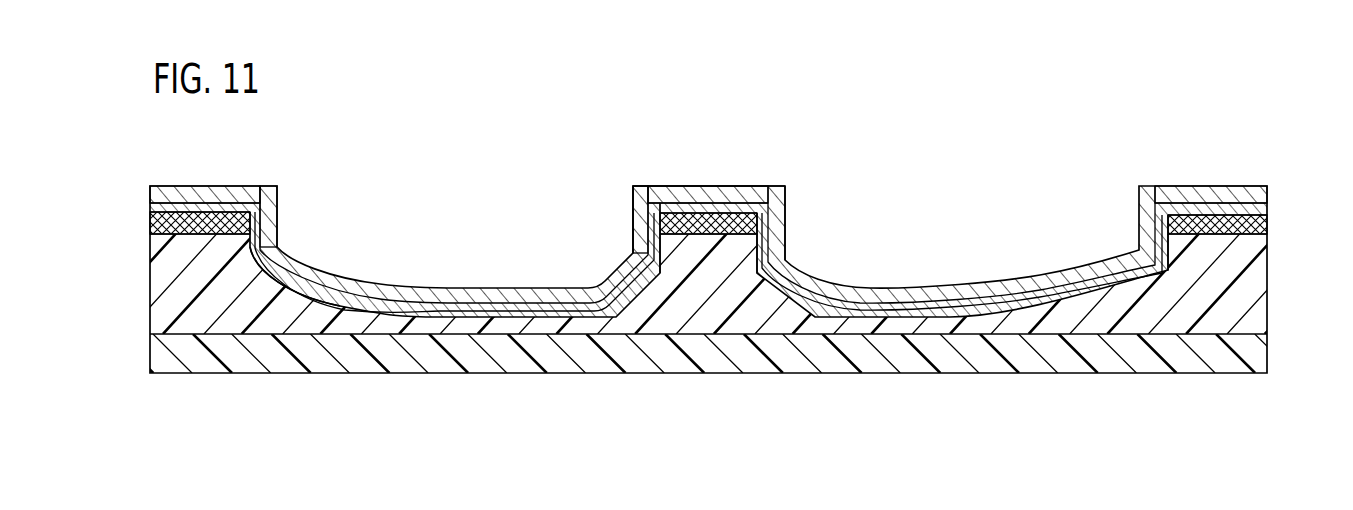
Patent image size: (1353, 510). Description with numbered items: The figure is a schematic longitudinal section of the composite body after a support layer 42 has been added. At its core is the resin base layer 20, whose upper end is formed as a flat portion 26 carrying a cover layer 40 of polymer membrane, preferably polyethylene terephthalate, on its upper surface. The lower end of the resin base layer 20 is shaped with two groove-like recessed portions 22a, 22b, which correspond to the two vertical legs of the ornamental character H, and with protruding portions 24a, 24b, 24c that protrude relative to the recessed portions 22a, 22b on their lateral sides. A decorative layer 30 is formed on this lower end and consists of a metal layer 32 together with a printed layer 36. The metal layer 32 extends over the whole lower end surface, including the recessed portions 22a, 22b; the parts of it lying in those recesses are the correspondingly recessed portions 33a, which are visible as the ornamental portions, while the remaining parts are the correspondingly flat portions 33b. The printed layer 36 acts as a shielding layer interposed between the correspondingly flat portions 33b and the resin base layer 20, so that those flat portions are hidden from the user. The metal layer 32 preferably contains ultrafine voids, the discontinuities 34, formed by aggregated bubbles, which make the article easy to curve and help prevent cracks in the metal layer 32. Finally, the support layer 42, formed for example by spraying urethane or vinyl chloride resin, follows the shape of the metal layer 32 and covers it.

The resin base layer 20 is at (1253, 284).
The recessed portion 22a is at (1033, 296).
The recessed portion 22b is at (475, 310).
The protruding portion 24a is at (1243, 253).
The protruding portion 24b is at (738, 248).
The protruding portion 24c is at (228, 247).
The flat portion 26 is at (695, 323).
The decorative layer 30 is at (704, 181).
The metal layer 32 is at (641, 193).
The correspondingly recessed portion 33a is at (386, 297).
The correspondingly flat portion 33b is at (187, 199).
The discontinuities 34 is at (568, 313).
The printed layer 36 is at (233, 214).
The cover layer 40 is at (1033, 363).
The support layer 42 is at (268, 189).